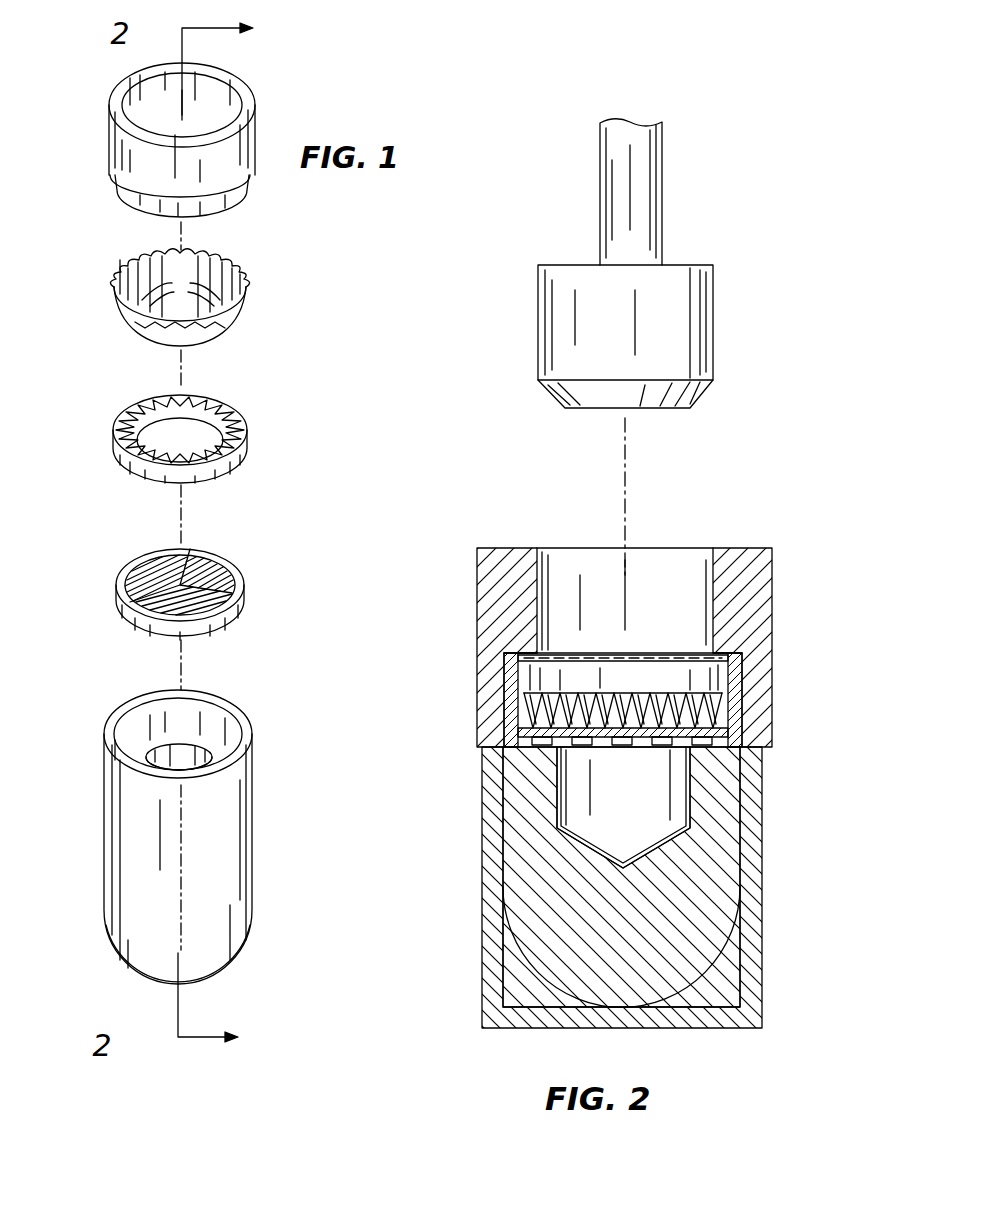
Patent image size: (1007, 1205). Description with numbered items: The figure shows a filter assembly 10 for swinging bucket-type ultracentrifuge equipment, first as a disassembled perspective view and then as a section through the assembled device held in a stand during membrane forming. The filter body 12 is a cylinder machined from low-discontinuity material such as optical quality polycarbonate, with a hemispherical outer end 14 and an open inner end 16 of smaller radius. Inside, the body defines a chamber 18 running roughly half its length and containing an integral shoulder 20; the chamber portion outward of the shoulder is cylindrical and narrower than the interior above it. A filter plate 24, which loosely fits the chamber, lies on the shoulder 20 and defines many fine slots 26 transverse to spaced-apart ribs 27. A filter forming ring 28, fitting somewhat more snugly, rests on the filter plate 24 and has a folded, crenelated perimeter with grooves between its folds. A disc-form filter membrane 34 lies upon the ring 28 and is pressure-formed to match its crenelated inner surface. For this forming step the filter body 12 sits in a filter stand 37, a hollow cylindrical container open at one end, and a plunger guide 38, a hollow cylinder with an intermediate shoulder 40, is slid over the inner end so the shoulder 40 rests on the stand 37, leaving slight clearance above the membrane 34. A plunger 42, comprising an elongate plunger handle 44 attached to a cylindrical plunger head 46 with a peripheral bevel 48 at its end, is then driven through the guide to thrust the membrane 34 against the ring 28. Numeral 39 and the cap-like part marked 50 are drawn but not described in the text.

In FIG. 1, the filter assembly 10 is at (262, 353).
In FIG. 2, the filter assembly 10 is at (455, 833).
In FIG. 1, the filter body 12 is at (181, 831).
In FIG. 2, the filter body 12 is at (661, 877).
In FIG. 1, the outer end 14 is at (123, 957).
In FIG. 2, the outer end 14 is at (702, 986).
In FIG. 1, the inner end 16 is at (238, 707).
In FIG. 2, the inner end 16 is at (623, 700).
In FIG. 1, the chamber 18 is at (165, 758).
In FIG. 2, the chamber 18 is at (665, 806).
In FIG. 1, the shoulder 20 is at (145, 757).
In FIG. 2, the shoulder 20 is at (528, 748).
In FIG. 1, the filter plate 24 is at (212, 562).
In FIG. 2, the filter plate 24 is at (674, 754).
In FIG. 1, the fine slots 26 is at (152, 553).
In FIG. 1, the ribs 27 is at (220, 593).
In FIG. 2, the ribs 27 is at (650, 743).
In FIG. 1, the filter forming ring 28 is at (244, 437).
In FIG. 2, the filter forming ring 28 is at (693, 710).
In FIG. 1, the filter membrane 34 is at (118, 295).
In FIG. 2, the filter membrane 34 is at (669, 654).
In FIG. 2, the filter stand 37 is at (730, 1024).
In FIG. 2, the plunger guide 38 is at (646, 622).
In FIG. 2, the cap bore 39 is at (655, 557).
In FIG. 2, the shoulder 40 is at (725, 652).
In FIG. 2, the plunger 42 is at (659, 255).
In FIG. 2, the plunger handle 44 is at (652, 212).
In FIG. 2, the plunger head 46 is at (705, 295).
In FIG. 2, the peripheral bevel 48 is at (660, 398).
In FIG. 1, the cap 50 is at (248, 124).